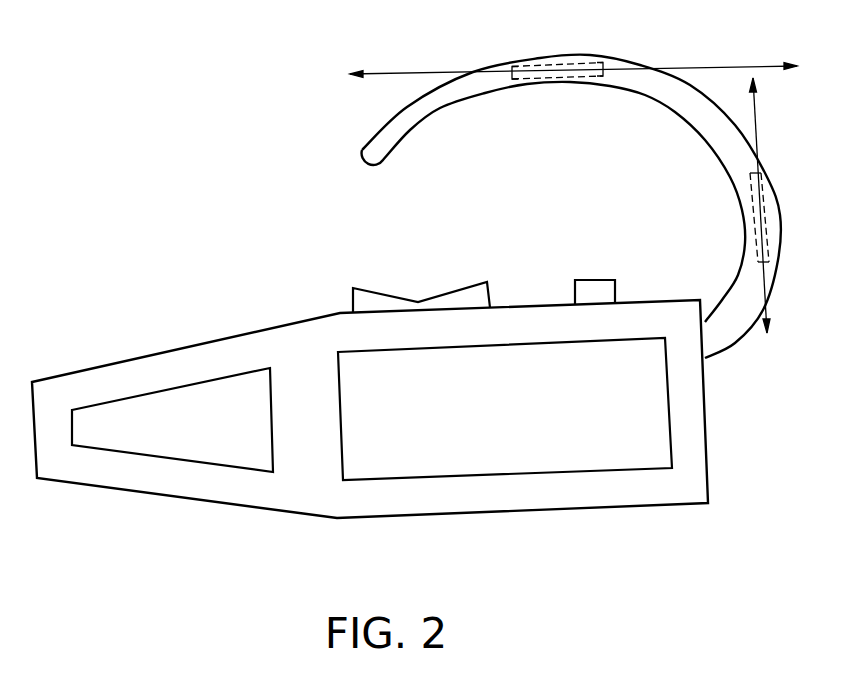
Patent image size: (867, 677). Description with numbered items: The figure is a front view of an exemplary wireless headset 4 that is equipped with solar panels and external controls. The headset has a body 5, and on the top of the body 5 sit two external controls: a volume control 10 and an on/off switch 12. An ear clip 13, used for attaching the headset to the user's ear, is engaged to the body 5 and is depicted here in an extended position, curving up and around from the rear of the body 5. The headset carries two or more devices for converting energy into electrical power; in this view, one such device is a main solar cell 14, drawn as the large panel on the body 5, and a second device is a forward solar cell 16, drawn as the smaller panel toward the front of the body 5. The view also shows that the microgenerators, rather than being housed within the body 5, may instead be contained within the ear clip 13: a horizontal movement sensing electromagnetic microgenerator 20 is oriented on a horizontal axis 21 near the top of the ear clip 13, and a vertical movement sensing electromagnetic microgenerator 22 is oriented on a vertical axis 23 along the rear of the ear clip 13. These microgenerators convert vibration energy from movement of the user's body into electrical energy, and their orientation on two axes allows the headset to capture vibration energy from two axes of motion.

The wireless headset 4 is at (432, 324).
The body 5 is at (418, 515).
The volume control 10 is at (437, 293).
The on/off switch 12 is at (597, 273).
The ear clip 13 is at (697, 88).
The main solar cell 14 is at (506, 427).
The forward solar cell 16 is at (182, 438).
The horizontal movement sensing electromagnetic microgenerator 20 is at (563, 62).
The horizontal axis 21 is at (427, 75).
The vertical movement sensing electromagnetic microgenerator 22 is at (767, 227).
The vertical axis 23 is at (757, 130).